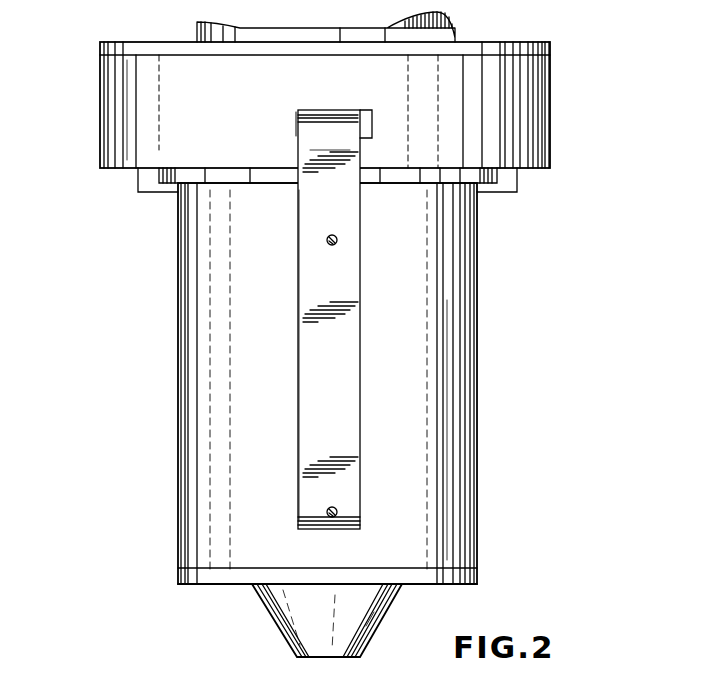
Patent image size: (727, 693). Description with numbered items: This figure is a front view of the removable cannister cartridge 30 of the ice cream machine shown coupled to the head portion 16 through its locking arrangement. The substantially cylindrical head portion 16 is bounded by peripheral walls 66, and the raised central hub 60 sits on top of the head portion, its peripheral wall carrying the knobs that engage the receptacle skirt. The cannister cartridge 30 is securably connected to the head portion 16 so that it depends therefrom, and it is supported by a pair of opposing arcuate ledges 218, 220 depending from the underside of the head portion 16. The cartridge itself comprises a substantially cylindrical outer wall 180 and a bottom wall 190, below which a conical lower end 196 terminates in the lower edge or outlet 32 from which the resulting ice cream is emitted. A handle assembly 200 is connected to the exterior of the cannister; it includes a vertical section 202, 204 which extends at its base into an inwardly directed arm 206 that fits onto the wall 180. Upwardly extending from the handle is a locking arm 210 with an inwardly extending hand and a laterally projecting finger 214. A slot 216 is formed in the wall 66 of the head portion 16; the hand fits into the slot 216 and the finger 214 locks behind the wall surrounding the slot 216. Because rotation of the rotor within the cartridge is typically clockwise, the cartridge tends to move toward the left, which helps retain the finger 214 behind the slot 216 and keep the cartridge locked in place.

The head portion 16 is at (98, 90).
The peripheral walls 66 is at (127, 134).
The raised central hub 60 is at (452, 35).
The arcuate ledge 218 is at (147, 193).
The arcuate ledge 220 is at (503, 192).
The removable cannister cartridge 30 is at (480, 340).
The cylindrical outer wall 180 is at (452, 470).
The bottom wall 190 is at (430, 586).
The handle assembly 200 is at (324, 337).
The vertical section 202 is at (362, 342).
The vertical section 204 is at (298, 343).
The inwardly directed arm 206 is at (348, 531).
The slot 216 is at (366, 110).
The locking arm 210 is at (355, 150).
The laterally projecting finger 214 is at (298, 128).
The outlet 32 is at (352, 658).
The conical lower end 196 is at (376, 631).